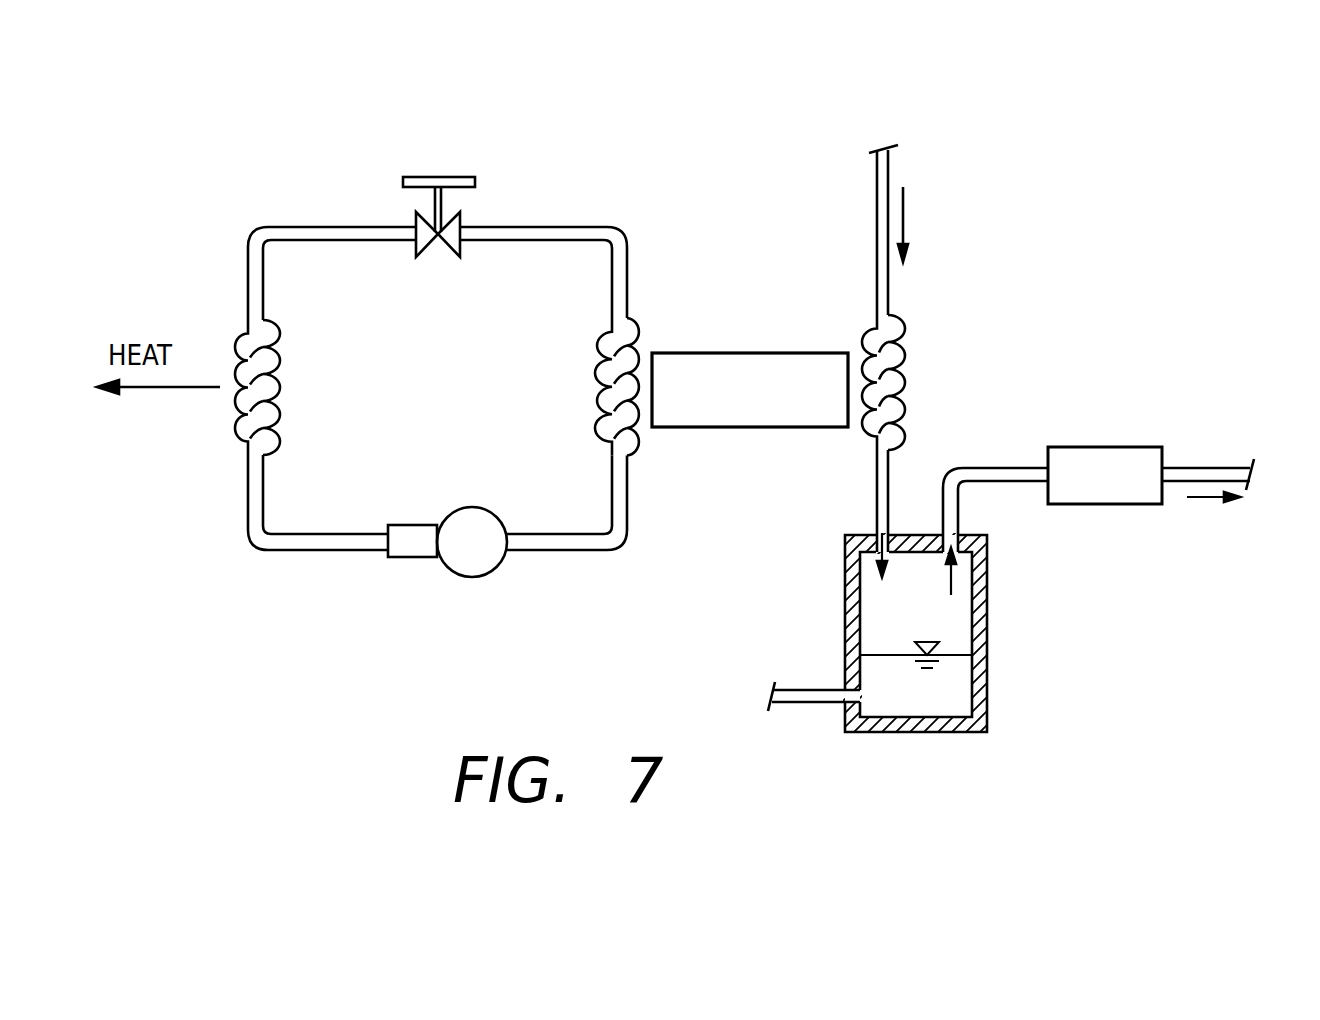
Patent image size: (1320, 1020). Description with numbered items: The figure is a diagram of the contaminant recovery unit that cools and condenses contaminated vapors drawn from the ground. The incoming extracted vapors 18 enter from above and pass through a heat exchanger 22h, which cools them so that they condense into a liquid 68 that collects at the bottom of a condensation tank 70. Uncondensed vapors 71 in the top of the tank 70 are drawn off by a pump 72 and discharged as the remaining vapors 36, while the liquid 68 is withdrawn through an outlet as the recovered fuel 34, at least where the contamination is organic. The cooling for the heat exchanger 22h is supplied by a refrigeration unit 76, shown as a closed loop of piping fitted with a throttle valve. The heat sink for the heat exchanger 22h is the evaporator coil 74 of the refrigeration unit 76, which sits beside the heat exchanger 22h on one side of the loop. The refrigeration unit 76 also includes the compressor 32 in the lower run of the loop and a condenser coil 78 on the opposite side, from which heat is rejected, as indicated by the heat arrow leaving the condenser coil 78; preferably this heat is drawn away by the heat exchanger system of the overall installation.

The extracted vapors 18 is at (878, 235).
The heat exchanger 22h is at (752, 352).
The compressor 32 is at (424, 558).
The recovered fuel 34 is at (803, 705).
The remaining vapors 36 is at (1203, 466).
The liquid 68 is at (950, 697).
The condensation tank 70 is at (988, 613).
The vapors 71 is at (986, 472).
The pump 72 is at (1100, 446).
The evaporator coil 74 is at (598, 441).
The refrigeration unit 76 is at (458, 428).
The condenser coil 78 is at (237, 440).